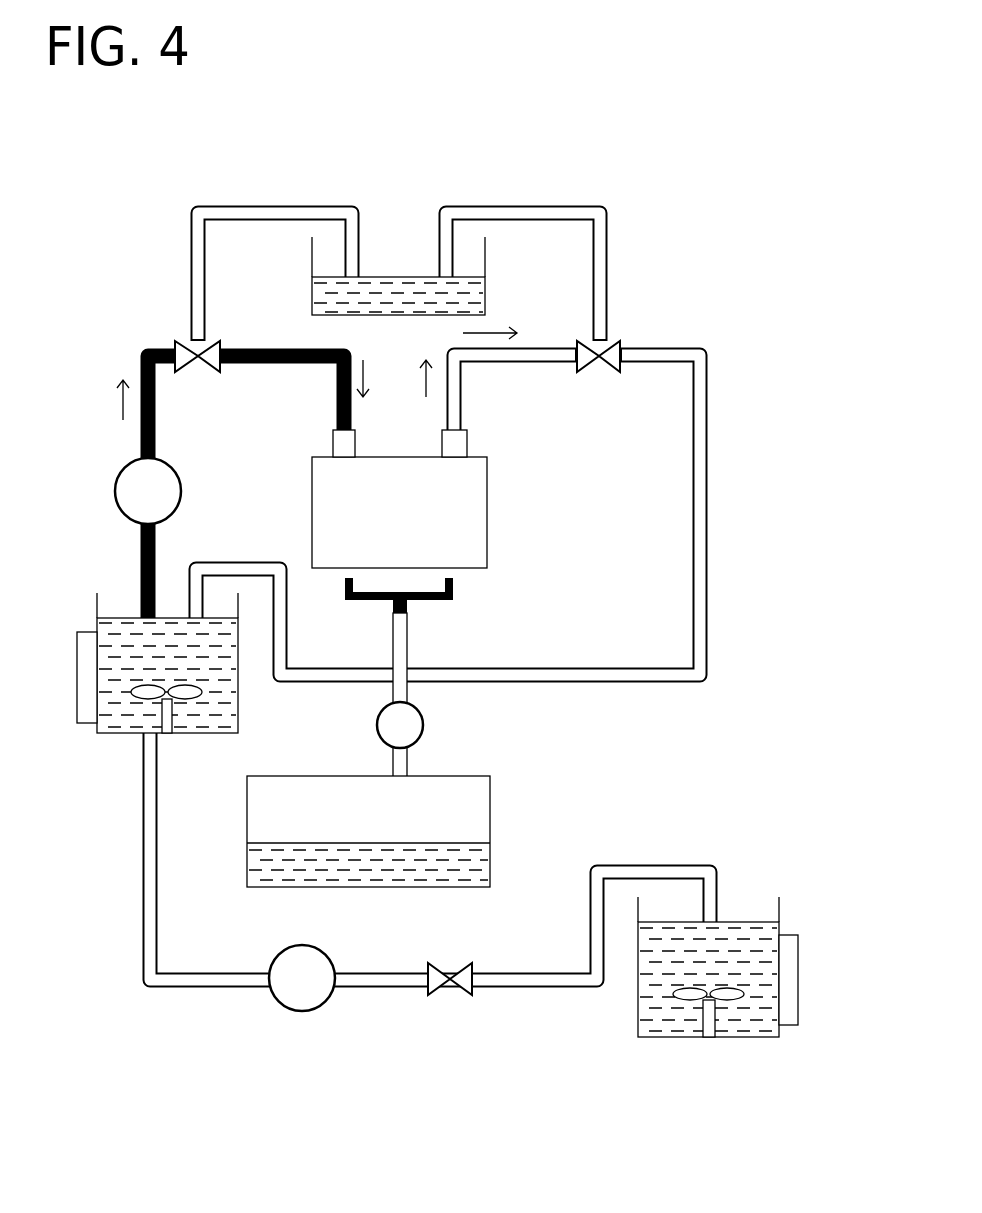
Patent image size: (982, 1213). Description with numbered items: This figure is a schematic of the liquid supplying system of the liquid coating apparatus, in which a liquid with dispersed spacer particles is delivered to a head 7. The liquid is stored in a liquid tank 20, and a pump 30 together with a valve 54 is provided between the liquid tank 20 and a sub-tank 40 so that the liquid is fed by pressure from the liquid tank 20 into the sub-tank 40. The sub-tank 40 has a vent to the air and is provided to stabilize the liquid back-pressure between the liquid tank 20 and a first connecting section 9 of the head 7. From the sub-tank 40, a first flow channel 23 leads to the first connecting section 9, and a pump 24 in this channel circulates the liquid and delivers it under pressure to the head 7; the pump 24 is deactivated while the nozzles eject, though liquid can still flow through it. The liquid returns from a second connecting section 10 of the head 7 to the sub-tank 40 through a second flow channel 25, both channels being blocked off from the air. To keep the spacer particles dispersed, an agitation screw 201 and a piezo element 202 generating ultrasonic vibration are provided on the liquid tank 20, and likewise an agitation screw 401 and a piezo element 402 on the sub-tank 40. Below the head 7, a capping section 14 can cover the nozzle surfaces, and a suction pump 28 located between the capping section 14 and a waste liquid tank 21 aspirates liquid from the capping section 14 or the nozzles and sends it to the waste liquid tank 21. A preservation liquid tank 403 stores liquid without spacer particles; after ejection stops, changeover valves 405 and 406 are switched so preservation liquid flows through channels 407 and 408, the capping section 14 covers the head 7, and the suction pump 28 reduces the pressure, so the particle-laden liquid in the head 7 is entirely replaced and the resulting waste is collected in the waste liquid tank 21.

The head 7 is at (487, 511).
The first connecting section 9 is at (333, 440).
The second connecting section 10 is at (467, 440).
The capping section 14 is at (462, 597).
The liquid tank 20 is at (755, 1037).
The waste liquid tank 21 is at (490, 820).
The first flow channel 23 is at (235, 363).
The pump 24 is at (115, 491).
The second flow channel 25 is at (707, 445).
The suction pump 28 is at (423, 725).
The pump 30 is at (300, 1011).
The sub-tank 40 is at (115, 733).
The valve 54 is at (452, 995).
The agitation screw 201 is at (735, 990).
The piezo element 202 is at (798, 977).
The agitation screw 401 is at (200, 690).
The piezo element 402 is at (77, 680).
The preservation liquid tank 403 is at (485, 297).
The changeover valve 405 is at (617, 346).
The changeover valve 406 is at (178, 346).
The channel 407 is at (607, 216).
The channel 408 is at (190, 228).